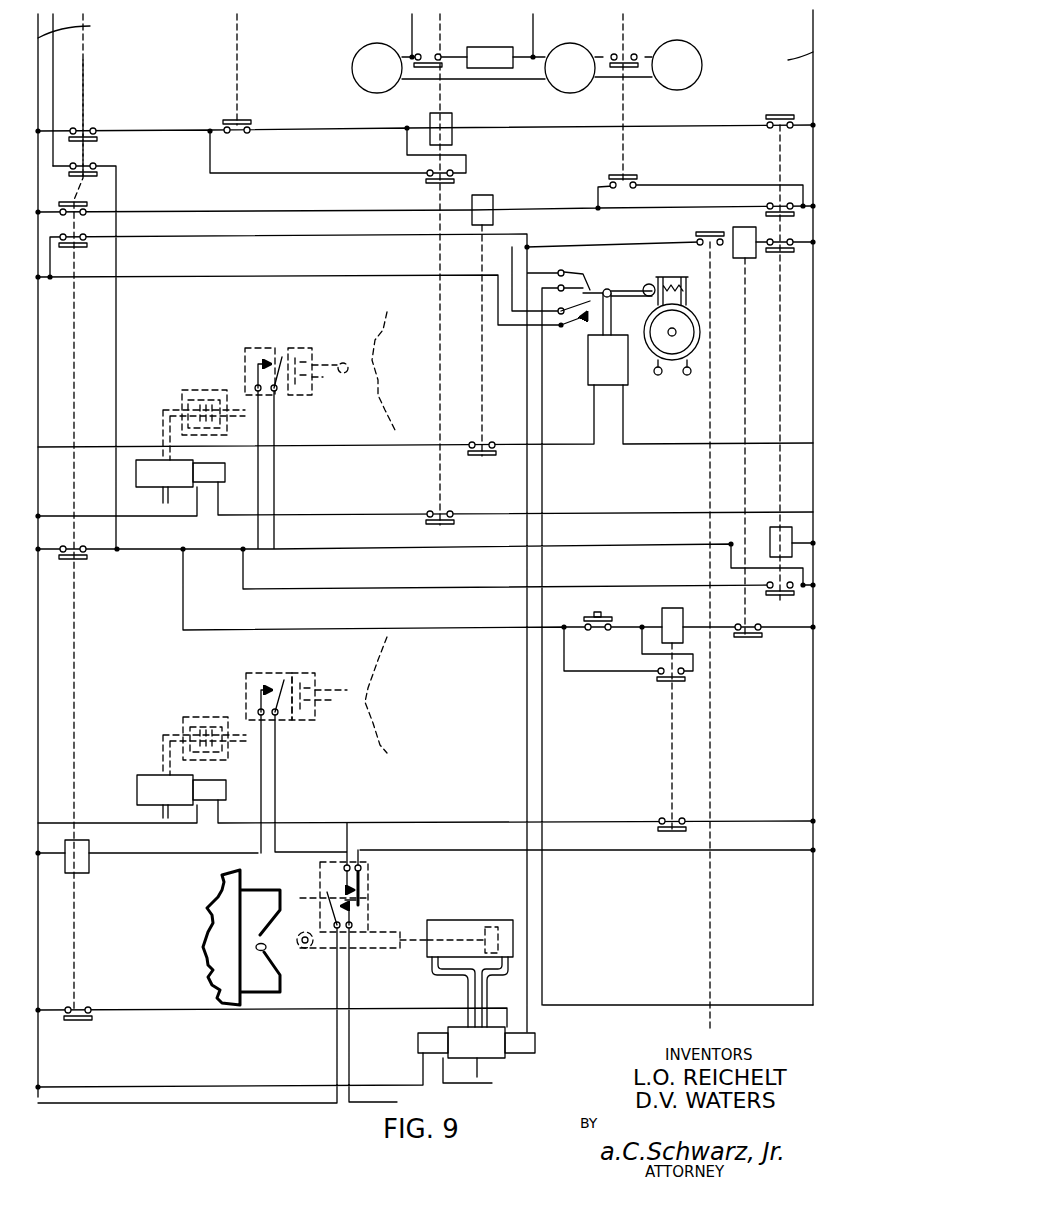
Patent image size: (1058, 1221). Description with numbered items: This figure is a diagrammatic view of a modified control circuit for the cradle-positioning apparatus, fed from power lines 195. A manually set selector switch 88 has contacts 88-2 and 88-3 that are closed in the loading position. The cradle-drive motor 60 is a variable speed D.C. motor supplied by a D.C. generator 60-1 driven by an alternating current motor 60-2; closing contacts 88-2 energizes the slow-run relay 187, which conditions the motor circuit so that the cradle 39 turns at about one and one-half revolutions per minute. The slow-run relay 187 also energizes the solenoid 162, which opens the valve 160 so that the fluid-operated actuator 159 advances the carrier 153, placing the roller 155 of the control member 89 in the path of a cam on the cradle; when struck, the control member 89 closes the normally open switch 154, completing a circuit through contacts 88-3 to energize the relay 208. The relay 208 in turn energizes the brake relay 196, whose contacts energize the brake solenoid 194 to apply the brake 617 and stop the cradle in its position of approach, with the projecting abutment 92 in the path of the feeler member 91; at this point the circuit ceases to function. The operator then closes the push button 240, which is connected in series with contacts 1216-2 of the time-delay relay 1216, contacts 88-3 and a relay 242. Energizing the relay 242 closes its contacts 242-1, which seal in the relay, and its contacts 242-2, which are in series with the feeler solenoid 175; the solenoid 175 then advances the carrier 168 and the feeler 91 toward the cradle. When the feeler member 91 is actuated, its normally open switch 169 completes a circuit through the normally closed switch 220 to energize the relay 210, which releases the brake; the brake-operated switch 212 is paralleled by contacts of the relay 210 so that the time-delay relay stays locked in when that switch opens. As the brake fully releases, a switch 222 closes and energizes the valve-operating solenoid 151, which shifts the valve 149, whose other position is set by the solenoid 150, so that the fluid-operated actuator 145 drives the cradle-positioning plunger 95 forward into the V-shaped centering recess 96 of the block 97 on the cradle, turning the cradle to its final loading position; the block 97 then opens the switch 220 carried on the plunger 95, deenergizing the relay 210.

The power lines 195 is at (425, 47).
The selector switch 88 is at (84, 84).
The contacts of selector switch 88-2 is at (88, 129).
The contacts of selector switch 88-3 is at (90, 164).
The cradle-drive motor 60 is at (688, 60).
The D.C. generator 60-1 is at (575, 100).
The alternating current motor 60-2 is at (380, 83).
The slow-run relay 187 is at (445, 124).
The brake relay 196 is at (482, 200).
The time-delay relay 1216 is at (740, 228).
The switch 222 is at (584, 281).
The brake-operated switch 212 is at (575, 323).
The brake solenoid 194 is at (600, 388).
The solenoid coil 617 is at (680, 270).
The carrier 153 is at (280, 348).
The normally open switch 154 is at (270, 358).
The control member 89 is at (336, 362).
The roller 155 is at (340, 375).
The fluid-operated actuator 159 is at (205, 388).
The cradle 39 is at (372, 408).
The valve 160 is at (145, 487).
The solenoid 162 is at (225, 480).
The carrier 168 is at (277, 673).
The normally open switch 169 is at (262, 688).
The projecting abutment 92 is at (365, 688).
The feeler member 91 is at (337, 700).
The feeler solenoid 175 is at (212, 795).
The relay 210 is at (90, 856).
The centering recess 96 is at (250, 948).
The block 97 is at (250, 975).
The normally closed switch 220 is at (362, 884).
The cradle-positioning plunger 95 is at (371, 948).
The fluid-operated actuator 145 is at (457, 920).
The valve 149 is at (465, 1030).
The solenoid 150 is at (418, 1043).
The valve-operating solenoid 151 is at (530, 1040).
The push button 240 is at (590, 617).
The relay 242 is at (668, 613).
The contacts of relay 242 242-1 is at (660, 668).
The contacts of time-delay relay 1216-2 is at (728, 637).
The relay 208 is at (775, 538).
The contacts of relay 242 242-2 is at (668, 815).